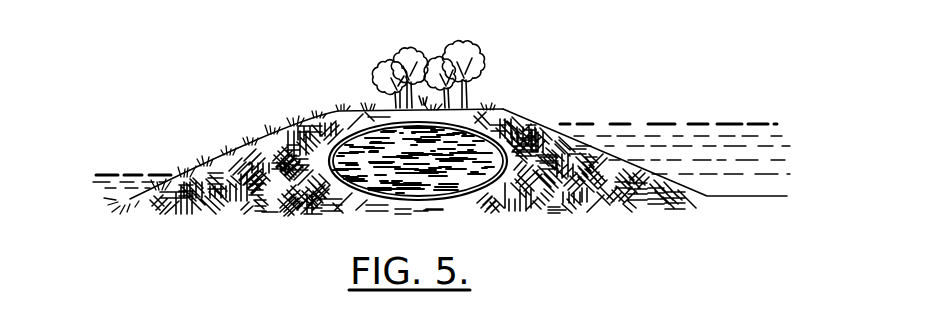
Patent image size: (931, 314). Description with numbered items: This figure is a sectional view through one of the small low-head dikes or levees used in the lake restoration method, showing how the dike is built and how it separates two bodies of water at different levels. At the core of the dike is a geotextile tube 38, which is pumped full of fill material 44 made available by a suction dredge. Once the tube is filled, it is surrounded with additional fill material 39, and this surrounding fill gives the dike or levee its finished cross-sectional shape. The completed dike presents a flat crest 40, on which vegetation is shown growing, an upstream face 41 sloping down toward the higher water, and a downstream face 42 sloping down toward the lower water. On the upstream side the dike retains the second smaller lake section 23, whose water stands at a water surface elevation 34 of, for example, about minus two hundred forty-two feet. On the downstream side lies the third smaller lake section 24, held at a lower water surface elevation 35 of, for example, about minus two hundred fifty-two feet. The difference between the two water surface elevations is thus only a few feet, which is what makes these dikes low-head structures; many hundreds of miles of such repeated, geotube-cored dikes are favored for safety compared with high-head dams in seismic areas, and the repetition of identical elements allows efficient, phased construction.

The second smaller lake section 23 is at (757, 167).
The third smaller lake section 24 is at (128, 190).
The water surface elevation 34 is at (723, 123).
The water surface elevation 35 is at (128, 172).
The geotextile tube 38 is at (463, 197).
The additional fill material 39 is at (257, 202).
The crest 40 is at (355, 110).
The upstream face 41 is at (523, 127).
The downstream face 42 is at (273, 130).
The fill material 44 is at (402, 163).